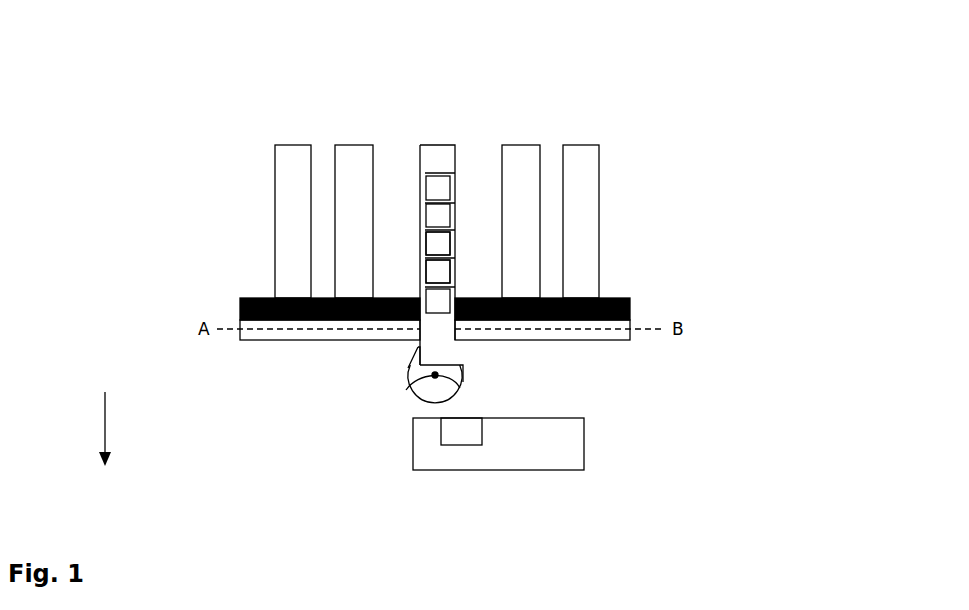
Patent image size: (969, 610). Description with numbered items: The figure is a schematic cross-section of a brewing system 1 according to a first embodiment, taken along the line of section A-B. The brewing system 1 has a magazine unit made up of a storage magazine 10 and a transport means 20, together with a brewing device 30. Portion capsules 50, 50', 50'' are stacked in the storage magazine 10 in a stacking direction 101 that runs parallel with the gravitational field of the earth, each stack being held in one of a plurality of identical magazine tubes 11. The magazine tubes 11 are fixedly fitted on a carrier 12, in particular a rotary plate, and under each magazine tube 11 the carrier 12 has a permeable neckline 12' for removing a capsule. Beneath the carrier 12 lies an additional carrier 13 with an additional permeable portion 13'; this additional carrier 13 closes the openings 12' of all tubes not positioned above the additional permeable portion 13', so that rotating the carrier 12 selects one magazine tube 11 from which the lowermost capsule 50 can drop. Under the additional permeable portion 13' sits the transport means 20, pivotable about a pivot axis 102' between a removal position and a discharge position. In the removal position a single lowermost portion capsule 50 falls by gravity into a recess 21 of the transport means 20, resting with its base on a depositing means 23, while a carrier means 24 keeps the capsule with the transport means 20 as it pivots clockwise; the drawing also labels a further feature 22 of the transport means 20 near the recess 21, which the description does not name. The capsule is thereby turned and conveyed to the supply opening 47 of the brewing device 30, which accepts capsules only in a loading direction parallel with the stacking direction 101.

The brewing system 1 is at (684, 116).
The storage magazine 10 is at (677, 241).
The magazine tube 11 is at (284, 157).
The carrier 12 is at (453, 299).
The permeable neckline 12' is at (405, 268).
The additional carrier 13 is at (481, 352).
The additional permeable portion 13' is at (399, 349).
The transport means 20 is at (308, 399).
The recess 21 is at (466, 354).
The droplet 22 is at (420, 398).
The depositing means 23 is at (462, 380).
The carrier means 24 is at (418, 367).
The brewing device 30 is at (606, 460).
The supply opening 47 is at (469, 427).
The portion capsule 50 is at (457, 243).
The portion capsule 50' is at (459, 269).
The portion capsule 50'' is at (462, 242).
The stacking direction 101 is at (86, 429).
The pivot axis 102' is at (377, 402).